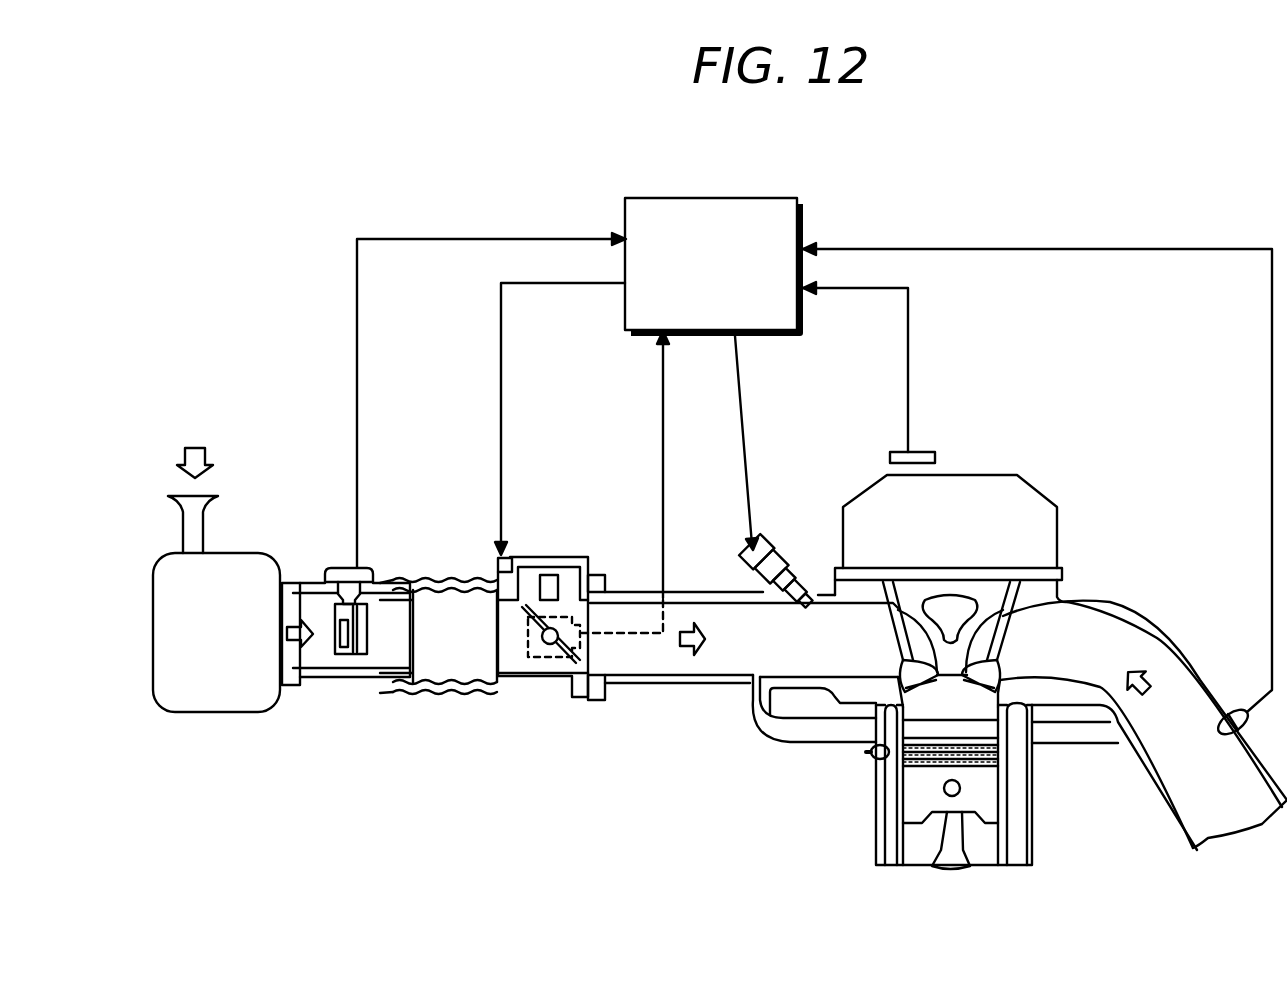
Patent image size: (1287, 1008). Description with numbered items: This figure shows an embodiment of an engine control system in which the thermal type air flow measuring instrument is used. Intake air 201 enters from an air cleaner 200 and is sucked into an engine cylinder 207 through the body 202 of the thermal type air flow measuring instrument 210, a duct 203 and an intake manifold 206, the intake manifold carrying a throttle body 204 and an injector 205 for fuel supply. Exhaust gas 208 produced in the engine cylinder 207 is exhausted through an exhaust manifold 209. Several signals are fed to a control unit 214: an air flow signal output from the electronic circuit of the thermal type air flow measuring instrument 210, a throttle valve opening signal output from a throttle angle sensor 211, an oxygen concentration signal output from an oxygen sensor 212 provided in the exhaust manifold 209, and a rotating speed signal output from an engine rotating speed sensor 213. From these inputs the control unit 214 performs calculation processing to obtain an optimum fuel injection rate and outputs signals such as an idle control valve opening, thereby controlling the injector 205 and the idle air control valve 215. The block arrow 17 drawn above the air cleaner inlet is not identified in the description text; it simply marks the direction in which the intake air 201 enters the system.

The intake air 17 is at (176, 445).
The air cleaner 200 is at (232, 564).
The intake air 201 is at (205, 452).
The body of thermal type air flow measuring instrument 202 is at (334, 688).
The duct 203 is at (424, 576).
The throttle body 204 is at (560, 695).
The injector 205 is at (770, 557).
The intake manifold 206 is at (683, 592).
The engine cylinder 207 is at (1000, 690).
The exhaust gas 208 is at (1143, 668).
The exhaust manifold 209 is at (1190, 652).
The thermal type air flow measuring instrument 210 is at (344, 567).
The throttle angle sensor 211 is at (533, 660).
The oxygen sensor 212 is at (1237, 710).
The engine rotating speed sensor 213 is at (940, 452).
The control unit 214 is at (803, 214).
The idle air control valve 215 is at (496, 560).